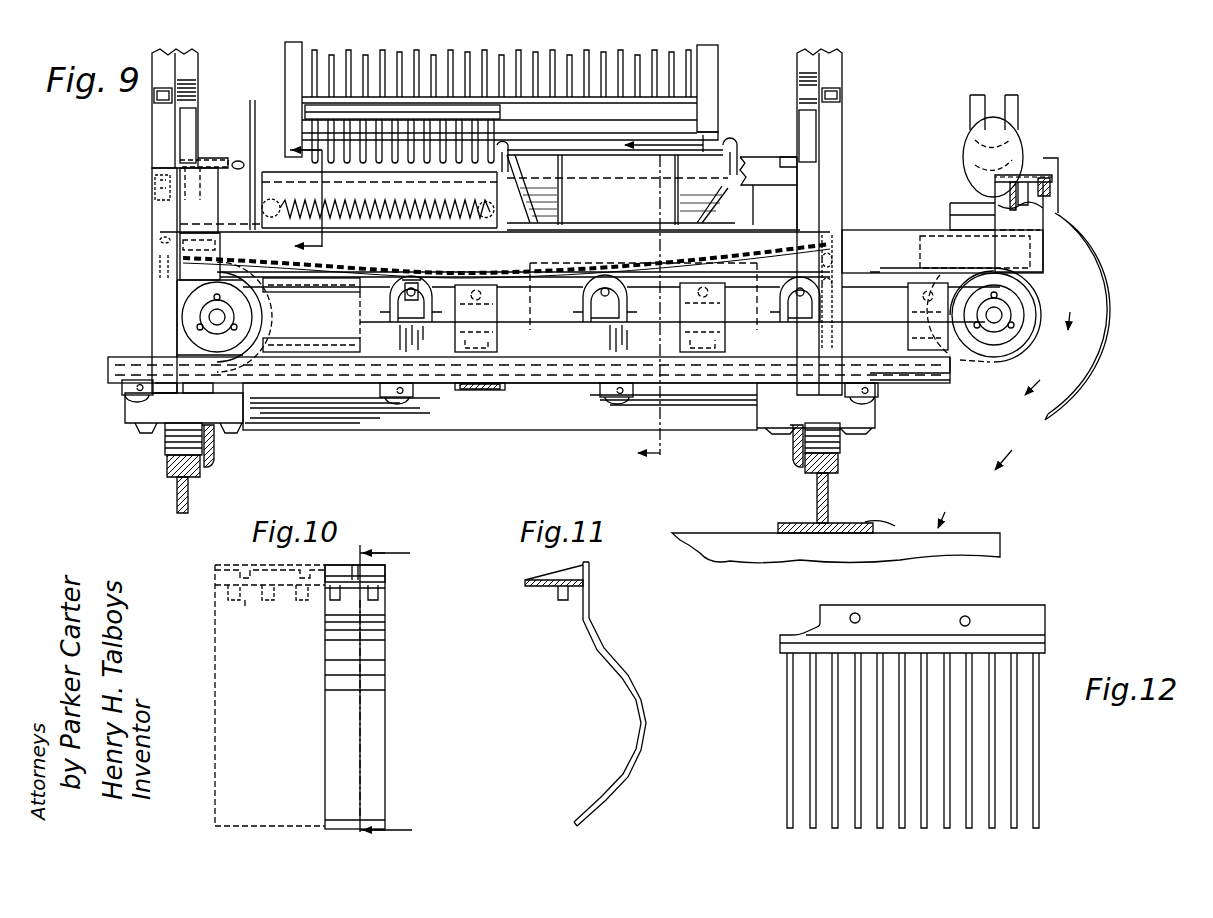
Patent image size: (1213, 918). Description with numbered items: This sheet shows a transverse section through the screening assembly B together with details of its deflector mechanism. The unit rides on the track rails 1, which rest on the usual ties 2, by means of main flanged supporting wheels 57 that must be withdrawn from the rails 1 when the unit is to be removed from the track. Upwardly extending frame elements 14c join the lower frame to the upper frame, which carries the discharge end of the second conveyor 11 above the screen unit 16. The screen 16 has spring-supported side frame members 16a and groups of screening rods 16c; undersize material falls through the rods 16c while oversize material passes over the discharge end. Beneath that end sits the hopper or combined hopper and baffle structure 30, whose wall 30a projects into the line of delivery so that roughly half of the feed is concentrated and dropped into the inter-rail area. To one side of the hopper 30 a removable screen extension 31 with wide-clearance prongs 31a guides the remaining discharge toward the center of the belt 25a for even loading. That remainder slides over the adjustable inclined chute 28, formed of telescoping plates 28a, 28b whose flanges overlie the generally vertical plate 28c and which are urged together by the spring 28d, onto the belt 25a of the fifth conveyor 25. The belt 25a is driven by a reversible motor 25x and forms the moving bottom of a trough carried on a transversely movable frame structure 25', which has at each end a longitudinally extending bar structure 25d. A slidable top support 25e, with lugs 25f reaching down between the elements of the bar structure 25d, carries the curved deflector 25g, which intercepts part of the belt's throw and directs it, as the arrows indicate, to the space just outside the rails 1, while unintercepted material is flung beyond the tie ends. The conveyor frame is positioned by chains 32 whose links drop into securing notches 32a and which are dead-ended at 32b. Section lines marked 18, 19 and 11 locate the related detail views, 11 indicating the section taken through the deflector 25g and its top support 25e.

In FIG. 9, the track rails 1 is at (190, 490).
In FIG. 9, the ties 2 is at (692, 545).
In FIG. 10, the number 2 conveyor 11 is at (399, 691).
In FIG. 9, the upwardly extending frame elements 14c is at (183, 67).
In FIG. 9, the screen unit 16 is at (519, 93).
In FIG. 9, the spring-supported side frame members 16a is at (290, 72).
In FIG. 9, the screening rods 16c is at (625, 60).
In FIG. 9, the section line 18- 18 is at (702, 298).
In FIG. 9, the section line 19- 19 is at (292, 198).
In FIG. 9, the number 5 conveyor 25 is at (575, 323).
In FIG. 9, the transversely movable frame structure 25' is at (910, 386).
In FIG. 9, the endless belt 25a is at (985, 360).
In FIG. 9, the end support or bar structure 25d is at (155, 184).
In FIG. 9, the top support 25e is at (1020, 175).
In FIG. 10, the top support 25e is at (385, 580).
In FIG. 11, the top support 25e is at (550, 590).
In FIG. 9, the lugs 25f is at (1022, 190).
In FIG. 10, the lugs 25f is at (362, 598).
In FIG. 11, the lugs 25f is at (563, 600).
In FIG. 9, the curved deflector 25g is at (1113, 282).
In FIG. 10, the curved deflector 25g is at (375, 672).
In FIG. 11, the curved deflector 25g is at (640, 729).
In FIG. 9, the reversible motor 25x is at (980, 135).
In FIG. 9, the adjustable inclined chute 28 is at (443, 190).
In FIG. 9, the telescoping plate 28a is at (488, 220).
In FIG. 9, the telescoping plate 28b is at (264, 205).
In FIG. 9, the spring 28d is at (182, 226).
In FIG. 9, the generally vertical plate 28c is at (372, 428).
In FIG. 9, the hopper or combined hopper and baffle structure 30 is at (648, 184).
In FIG. 9, the hopper wall 30a is at (600, 160).
In FIG. 9, the screen extension 31 is at (368, 125).
In FIG. 12, the screen extension 31 is at (1042, 622).
In FIG. 9, the prongs 31a is at (312, 136).
In FIG. 12, the prongs 31a is at (832, 785).
In FIG. 9, the chains 32 is at (318, 265).
In FIG. 9, the securing notches 32a is at (180, 258).
In FIG. 9, the dead-ended chain ends 32b is at (605, 275).
In FIG. 9, the main flanged supporting wheels 57 is at (166, 443).
In FIG. 9, the screening assembly B is at (845, 78).